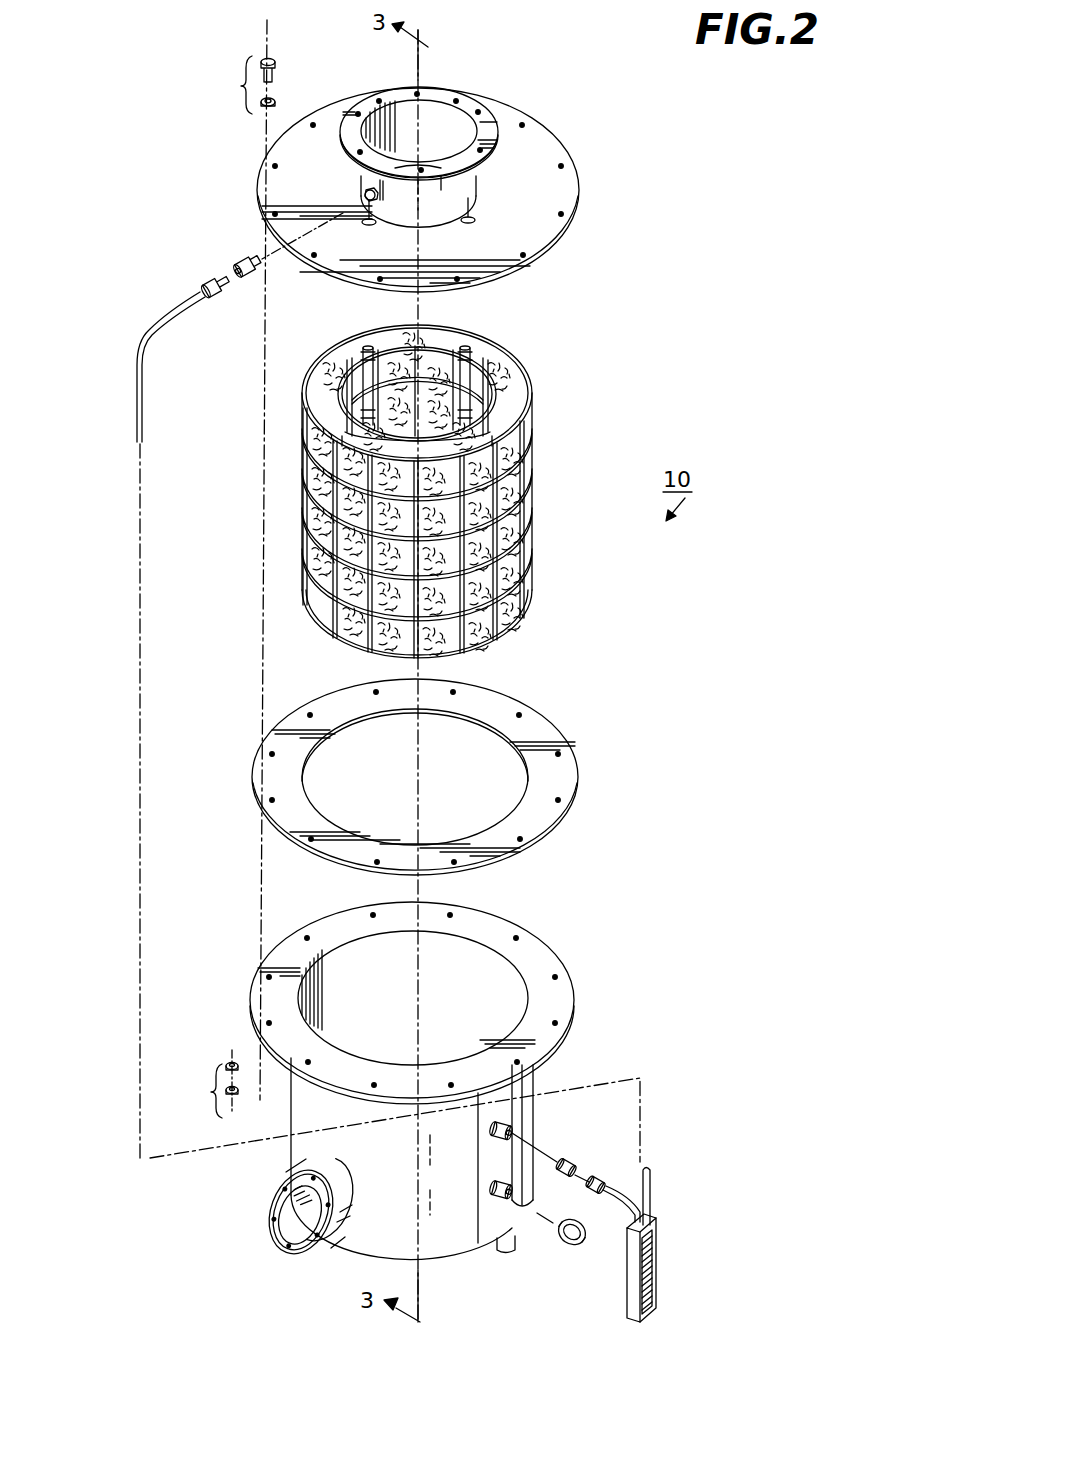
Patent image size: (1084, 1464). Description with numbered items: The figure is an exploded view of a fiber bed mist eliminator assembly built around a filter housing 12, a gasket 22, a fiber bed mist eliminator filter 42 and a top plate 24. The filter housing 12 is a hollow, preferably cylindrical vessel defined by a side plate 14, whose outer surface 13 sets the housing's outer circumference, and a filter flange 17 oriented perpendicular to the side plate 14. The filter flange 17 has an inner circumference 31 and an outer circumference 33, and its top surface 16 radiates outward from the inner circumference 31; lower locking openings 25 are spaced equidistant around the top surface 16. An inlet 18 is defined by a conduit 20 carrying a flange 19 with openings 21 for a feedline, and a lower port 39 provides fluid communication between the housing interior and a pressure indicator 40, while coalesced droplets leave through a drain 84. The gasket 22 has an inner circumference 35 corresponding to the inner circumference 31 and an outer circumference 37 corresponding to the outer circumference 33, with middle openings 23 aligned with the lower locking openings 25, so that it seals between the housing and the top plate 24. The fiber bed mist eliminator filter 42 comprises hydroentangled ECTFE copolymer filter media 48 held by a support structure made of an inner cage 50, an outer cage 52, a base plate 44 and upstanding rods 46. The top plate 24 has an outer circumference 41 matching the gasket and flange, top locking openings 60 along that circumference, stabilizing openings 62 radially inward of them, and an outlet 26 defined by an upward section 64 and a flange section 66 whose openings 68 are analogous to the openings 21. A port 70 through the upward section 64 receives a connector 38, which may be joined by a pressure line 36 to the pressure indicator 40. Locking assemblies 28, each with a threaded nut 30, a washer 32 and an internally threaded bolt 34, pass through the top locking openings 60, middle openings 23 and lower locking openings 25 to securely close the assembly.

The filter housing 12 is at (592, 1027).
The outer surface 13 is at (424, 1136).
The side plate 14 is at (525, 1084).
The top surface 16 is at (278, 1022).
The filter flange 17 is at (568, 968).
The inlet 18 is at (287, 1219).
The flange 19 is at (312, 1256).
The conduit 20 is at (293, 1171).
The openings 21 is at (294, 1250).
The gasket 22 is at (592, 800).
The middle openings 23 is at (260, 746).
The top plate 24 is at (586, 221).
The lower locking openings 25 is at (266, 952).
The outlet 26 is at (448, 128).
The locking assemblies 28 is at (216, 587).
The threaded nut 30 is at (266, 58).
The inner circumference 31 is at (302, 998).
The washer 32 is at (264, 108).
The outer circumference 33 is at (252, 983).
The internally threaded bolt 34 is at (235, 1096).
The inner circumference 35 is at (306, 788).
The pressure line 36 is at (153, 320).
The outer circumference 37 is at (254, 756).
The connector 38 is at (242, 256).
The lower port 39 is at (496, 1138).
The pressure indicator 40 is at (656, 1282).
The outer circumference 41 is at (575, 157).
The fiber bed mist eliminator filter 42 is at (543, 568).
The base plate 44 is at (322, 614).
The upstanding rods 46 is at (365, 360).
The hydroentangled ECTFE copolymer filter media 48 is at (318, 392).
The inner cage 50 is at (340, 384).
The outer cage 52 is at (332, 426).
The top locking openings 60 is at (580, 191).
The stabilizing openings 62 is at (475, 220).
The upward section 64 is at (406, 216).
The flange section 66 is at (358, 116).
The openings 68 is at (497, 136).
The port 70 is at (361, 182).
The drain 84 is at (516, 1246).